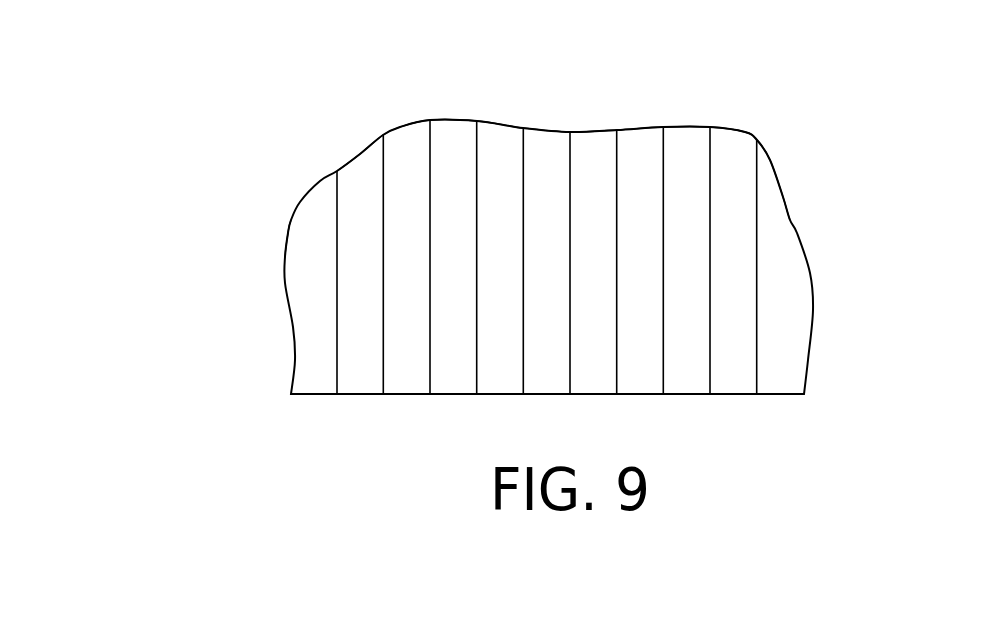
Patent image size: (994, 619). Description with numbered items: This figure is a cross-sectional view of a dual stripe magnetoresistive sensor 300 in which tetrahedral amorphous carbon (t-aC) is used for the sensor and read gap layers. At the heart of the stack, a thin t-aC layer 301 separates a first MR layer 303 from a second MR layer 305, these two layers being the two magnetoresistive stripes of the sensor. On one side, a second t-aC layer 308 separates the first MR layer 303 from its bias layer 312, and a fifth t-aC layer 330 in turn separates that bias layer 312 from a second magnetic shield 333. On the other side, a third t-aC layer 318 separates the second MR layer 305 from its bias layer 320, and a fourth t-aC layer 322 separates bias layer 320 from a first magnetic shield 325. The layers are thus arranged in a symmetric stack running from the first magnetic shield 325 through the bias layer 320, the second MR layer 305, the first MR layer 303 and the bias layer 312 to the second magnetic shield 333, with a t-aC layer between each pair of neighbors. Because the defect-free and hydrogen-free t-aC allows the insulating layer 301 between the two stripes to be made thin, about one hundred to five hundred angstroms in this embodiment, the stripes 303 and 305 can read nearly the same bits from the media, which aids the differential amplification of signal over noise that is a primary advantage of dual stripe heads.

The dual stripe magnetoresistive (DSMR) sensor 300 is at (160, 256).
The first magnetic shield 325 is at (298, 230).
The fourth t-aC layer 322 is at (360, 158).
The bias layer 320 is at (396, 136).
The third t-aC layer 318 is at (453, 123).
The second MR layer 305 is at (501, 126).
The thin t-aC layer 301 is at (547, 134).
The first MR layer 303 is at (594, 135).
The second t-aC layer 308 is at (635, 129).
The bias layer 312 is at (687, 130).
The fifth t-aC layer 330 is at (738, 138).
The second magnetic shield 333 is at (786, 208).